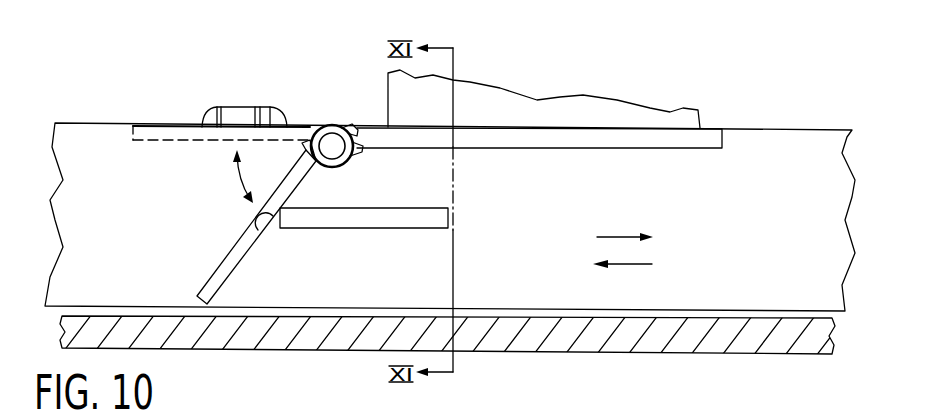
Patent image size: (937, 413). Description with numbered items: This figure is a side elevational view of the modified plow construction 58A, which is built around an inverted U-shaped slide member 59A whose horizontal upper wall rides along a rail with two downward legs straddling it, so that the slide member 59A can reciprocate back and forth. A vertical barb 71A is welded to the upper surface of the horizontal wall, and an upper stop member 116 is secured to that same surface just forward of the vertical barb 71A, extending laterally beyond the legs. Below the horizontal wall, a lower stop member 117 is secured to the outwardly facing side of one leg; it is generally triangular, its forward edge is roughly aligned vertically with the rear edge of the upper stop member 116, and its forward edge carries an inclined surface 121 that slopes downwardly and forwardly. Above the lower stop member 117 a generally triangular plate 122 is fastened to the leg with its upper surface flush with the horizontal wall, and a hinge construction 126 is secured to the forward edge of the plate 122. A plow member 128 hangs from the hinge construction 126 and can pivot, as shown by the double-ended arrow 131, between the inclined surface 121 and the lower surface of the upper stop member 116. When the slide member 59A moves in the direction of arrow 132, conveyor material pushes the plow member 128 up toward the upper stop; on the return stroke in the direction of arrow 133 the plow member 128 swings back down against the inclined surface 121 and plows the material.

The slide member 59A is at (765, 120).
The modified plow construction 58A is at (525, 59).
The vertical barb 71A is at (560, 110).
The triangularly shaped plate 122 is at (633, 137).
The upper stop member 116 is at (242, 117).
The hinge construction 126 is at (337, 110).
The plow member 128 is at (222, 272).
The inclined surface 121 is at (255, 216).
The lower stop member 117 is at (325, 222).
The double-ended arrow 131 is at (238, 177).
The arrow 132 is at (618, 237).
The arrow 133 is at (622, 265).